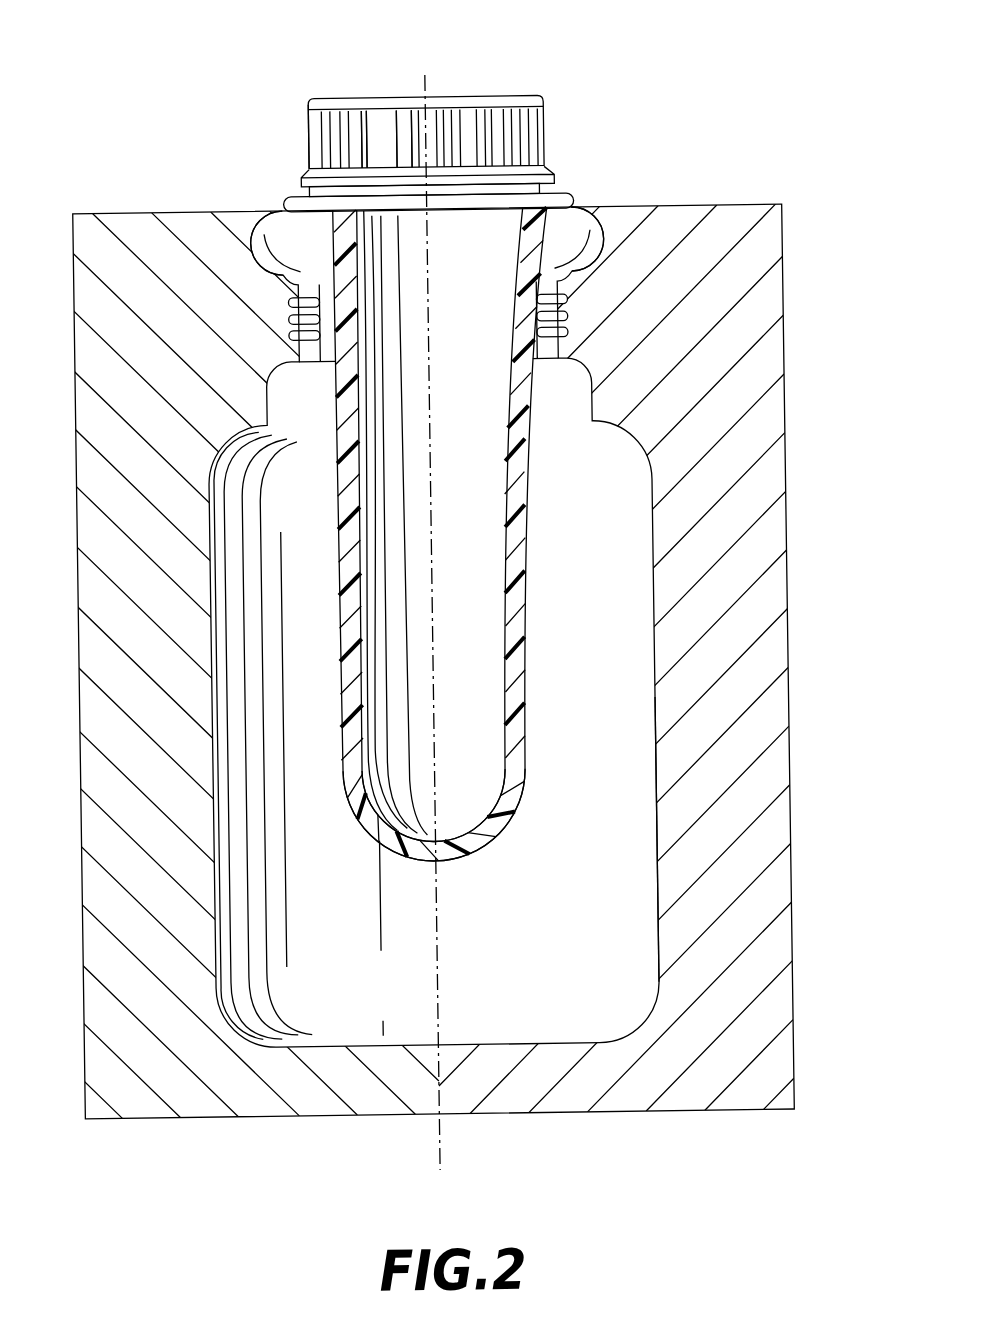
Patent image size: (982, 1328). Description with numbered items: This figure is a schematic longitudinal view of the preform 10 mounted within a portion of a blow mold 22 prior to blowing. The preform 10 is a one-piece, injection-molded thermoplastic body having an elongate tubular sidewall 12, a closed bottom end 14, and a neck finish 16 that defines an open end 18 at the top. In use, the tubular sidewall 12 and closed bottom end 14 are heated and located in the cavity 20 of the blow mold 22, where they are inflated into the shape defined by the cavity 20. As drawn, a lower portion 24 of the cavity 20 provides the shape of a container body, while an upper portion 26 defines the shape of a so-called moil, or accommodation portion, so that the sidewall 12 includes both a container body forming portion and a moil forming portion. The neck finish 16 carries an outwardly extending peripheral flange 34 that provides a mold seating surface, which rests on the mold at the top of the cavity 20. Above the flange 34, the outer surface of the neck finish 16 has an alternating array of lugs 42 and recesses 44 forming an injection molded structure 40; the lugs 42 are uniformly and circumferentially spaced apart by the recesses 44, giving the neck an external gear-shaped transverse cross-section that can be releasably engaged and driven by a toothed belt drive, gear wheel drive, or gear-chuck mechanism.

The preform 10 is at (425, 99).
The elongate tubular sidewall 12 is at (527, 633).
The closed bottom end 14 is at (444, 860).
The neck finish 16 is at (551, 128).
The open end 18 is at (449, 97).
The cavity 20 is at (539, 961).
The blow mold 22 is at (772, 305).
The lower portion 24 is at (653, 780).
The upper portion 26 is at (276, 208).
The peripheral flange 34 is at (570, 202).
The injection molded structure 40 is at (315, 118).
The lugs 42 is at (407, 127).
The recesses 44 is at (387, 122).